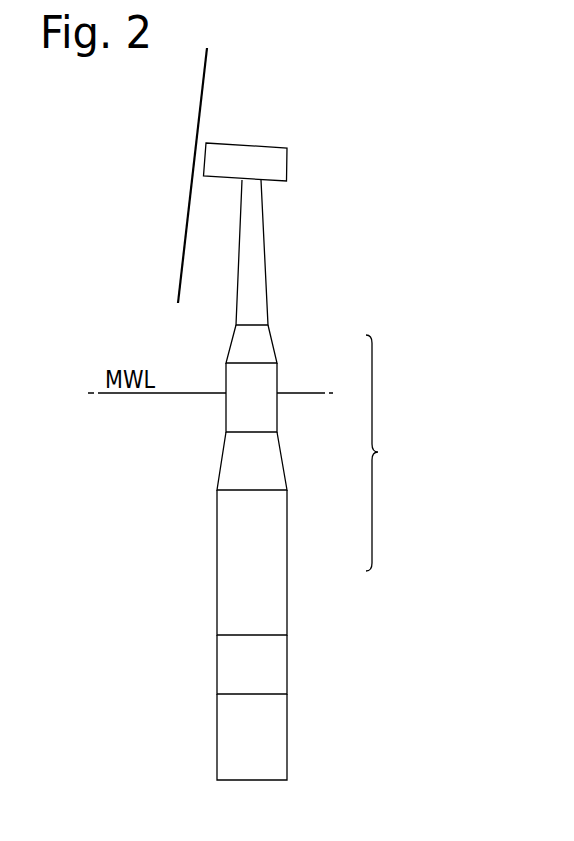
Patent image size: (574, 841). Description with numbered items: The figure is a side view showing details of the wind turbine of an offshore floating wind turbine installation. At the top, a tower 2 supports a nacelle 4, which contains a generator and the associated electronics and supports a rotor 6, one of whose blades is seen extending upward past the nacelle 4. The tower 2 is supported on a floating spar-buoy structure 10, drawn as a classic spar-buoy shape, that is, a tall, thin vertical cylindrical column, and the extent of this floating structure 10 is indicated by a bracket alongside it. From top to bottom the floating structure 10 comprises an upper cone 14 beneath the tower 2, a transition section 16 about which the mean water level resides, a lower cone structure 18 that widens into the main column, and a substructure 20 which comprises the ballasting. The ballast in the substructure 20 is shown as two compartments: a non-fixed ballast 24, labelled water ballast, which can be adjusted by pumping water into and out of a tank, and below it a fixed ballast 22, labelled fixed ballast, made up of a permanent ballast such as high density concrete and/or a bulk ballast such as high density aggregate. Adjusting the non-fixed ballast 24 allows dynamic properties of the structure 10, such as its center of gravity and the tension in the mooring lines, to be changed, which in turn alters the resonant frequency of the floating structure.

The tower 2 is at (258, 269).
The nacelle 4 is at (278, 146).
The rotor 6 is at (192, 172).
The floating spar-buoy structure 10 is at (386, 453).
The upper cone 14 is at (265, 352).
The transition section 16 is at (268, 412).
The lower cone structure 18 is at (268, 468).
The substructure 20 is at (272, 562).
The fixed ballast 22 is at (267, 718).
The non-fixed ballast 24 is at (233, 660).